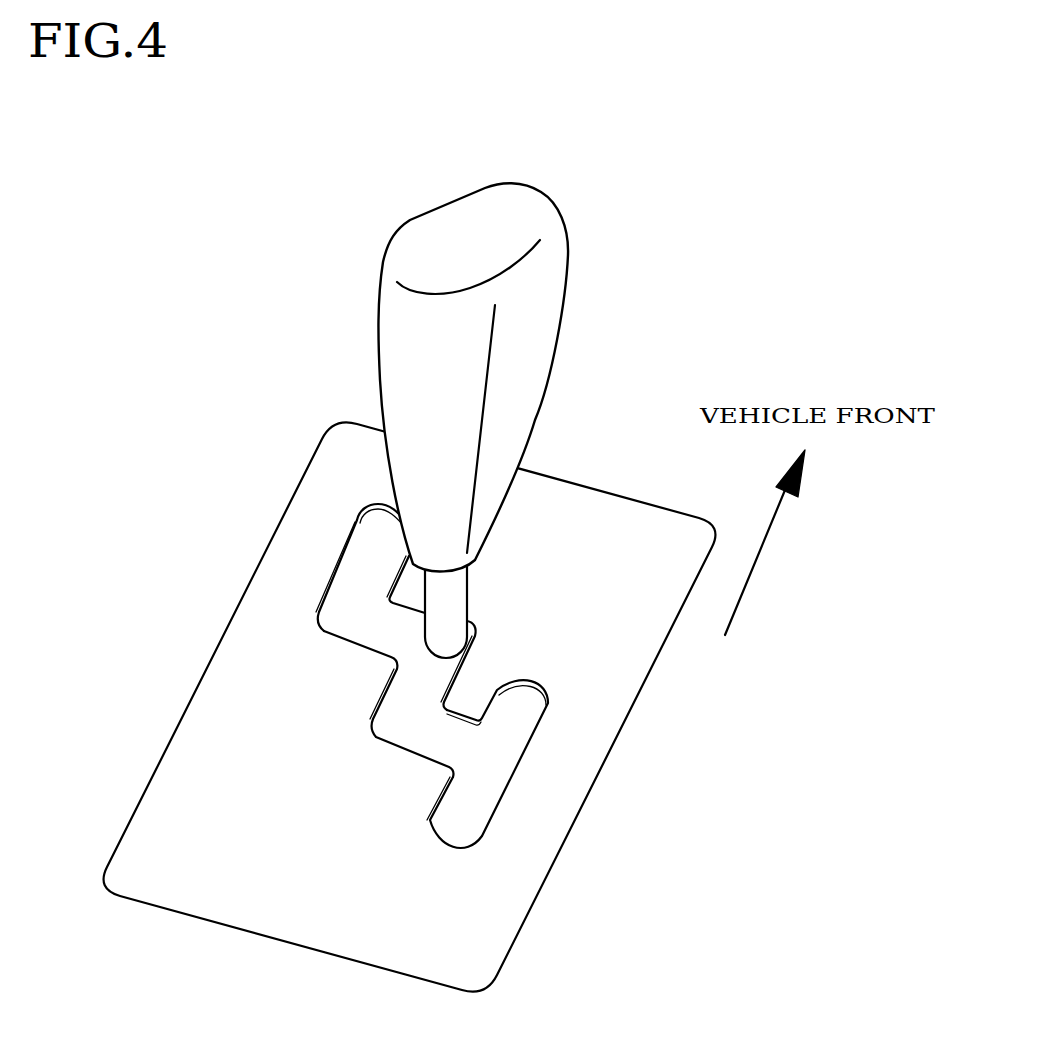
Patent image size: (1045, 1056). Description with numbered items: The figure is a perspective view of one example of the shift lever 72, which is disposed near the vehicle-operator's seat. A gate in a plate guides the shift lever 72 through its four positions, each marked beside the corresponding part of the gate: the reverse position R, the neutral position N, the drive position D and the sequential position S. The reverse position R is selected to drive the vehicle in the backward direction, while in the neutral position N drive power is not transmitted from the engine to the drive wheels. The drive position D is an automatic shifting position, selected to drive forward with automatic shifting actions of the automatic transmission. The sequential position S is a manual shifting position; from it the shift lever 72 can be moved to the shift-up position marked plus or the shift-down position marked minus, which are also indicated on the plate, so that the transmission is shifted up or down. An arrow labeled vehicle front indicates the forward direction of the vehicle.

The shift lever 72 is at (537, 368).
The reverse position R is at (370, 565).
The neutral position N is at (470, 654).
The drive position D is at (389, 704).
The sequential position S is at (478, 763).